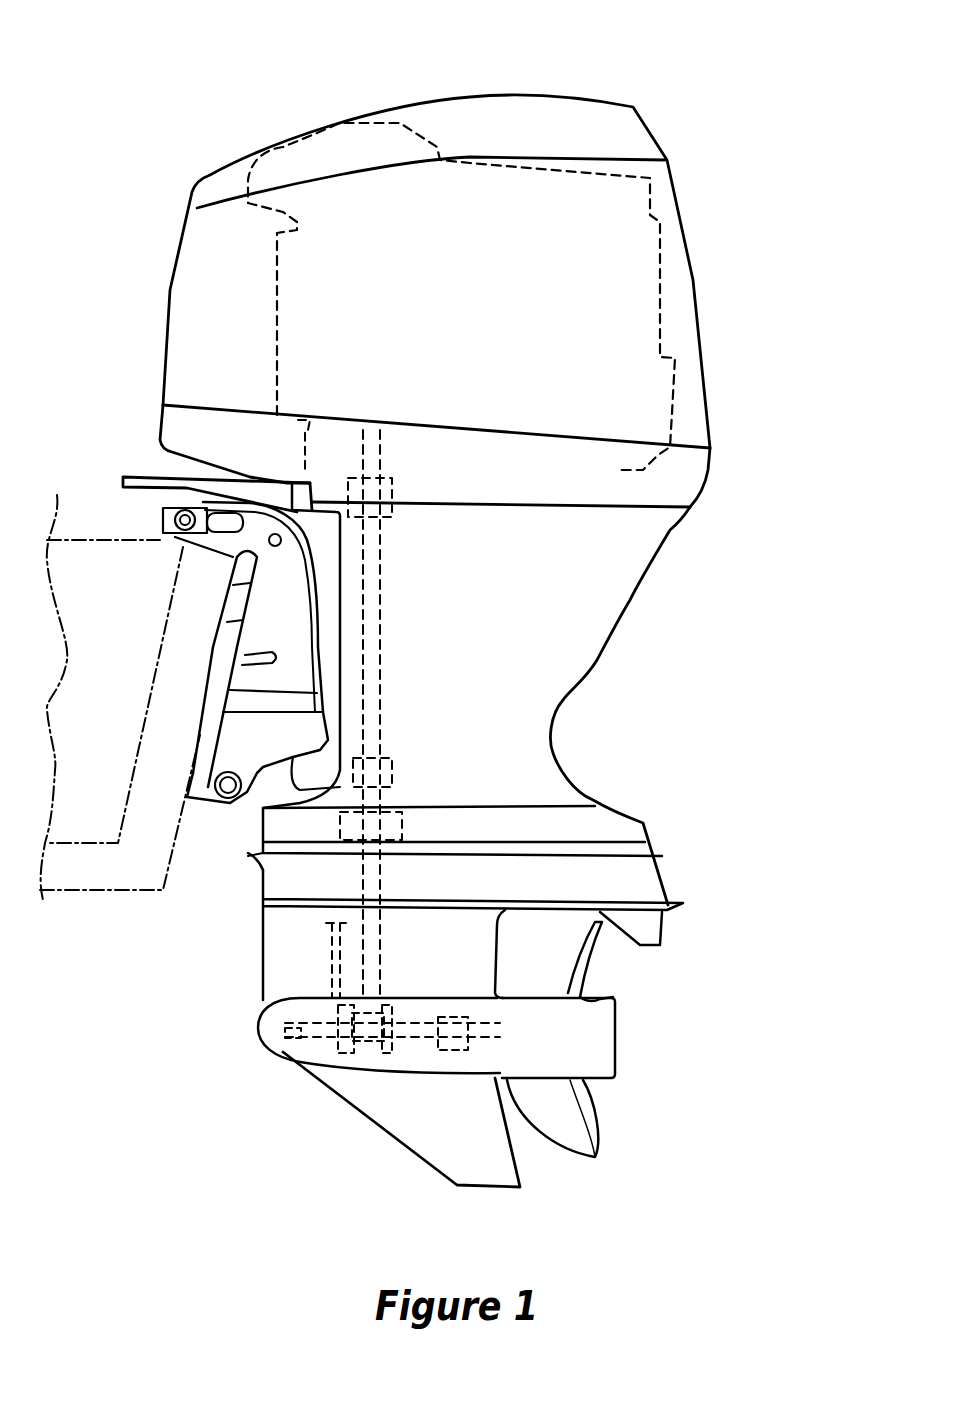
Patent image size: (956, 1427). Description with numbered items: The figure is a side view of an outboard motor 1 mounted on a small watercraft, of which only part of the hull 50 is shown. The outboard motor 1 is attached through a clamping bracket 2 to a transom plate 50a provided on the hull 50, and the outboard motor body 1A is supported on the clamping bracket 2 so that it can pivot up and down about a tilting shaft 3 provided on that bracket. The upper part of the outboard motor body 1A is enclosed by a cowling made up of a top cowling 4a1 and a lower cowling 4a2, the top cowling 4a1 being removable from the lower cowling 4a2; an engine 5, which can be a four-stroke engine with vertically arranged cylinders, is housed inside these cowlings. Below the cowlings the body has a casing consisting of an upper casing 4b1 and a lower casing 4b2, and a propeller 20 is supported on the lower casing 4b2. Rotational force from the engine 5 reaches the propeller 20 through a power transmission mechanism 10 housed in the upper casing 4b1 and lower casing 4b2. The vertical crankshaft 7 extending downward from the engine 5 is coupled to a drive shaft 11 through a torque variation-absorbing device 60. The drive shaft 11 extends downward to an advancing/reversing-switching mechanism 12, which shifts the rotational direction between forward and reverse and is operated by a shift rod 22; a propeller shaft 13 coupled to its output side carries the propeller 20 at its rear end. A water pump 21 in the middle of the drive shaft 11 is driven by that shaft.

The outboard motor 1 is at (570, 82).
The outboard motor body 1A is at (725, 430).
The clamping bracket 2 is at (290, 617).
The tilting shaft 3 is at (167, 513).
The top cowling 4a1 is at (690, 233).
The lower cowling 4a2 is at (690, 482).
The upper casing 4b1 is at (547, 778).
The lower casing 4b2 is at (480, 963).
The engine 5 is at (272, 303).
The crankshaft 7 is at (382, 462).
The power transmission mechanism 10 is at (395, 645).
The drive shaft 11 is at (385, 718).
The advancing/reversing-switching mechanism 12 is at (405, 985).
The propeller shaft 13 is at (410, 1050).
The propeller 20 is at (597, 1130).
The water pump 21 is at (405, 832).
The shift rod 22 is at (328, 960).
The hull 50 is at (119, 682).
The transom plate 50a is at (160, 692).
The torque variation-absorbing device 60 is at (395, 512).